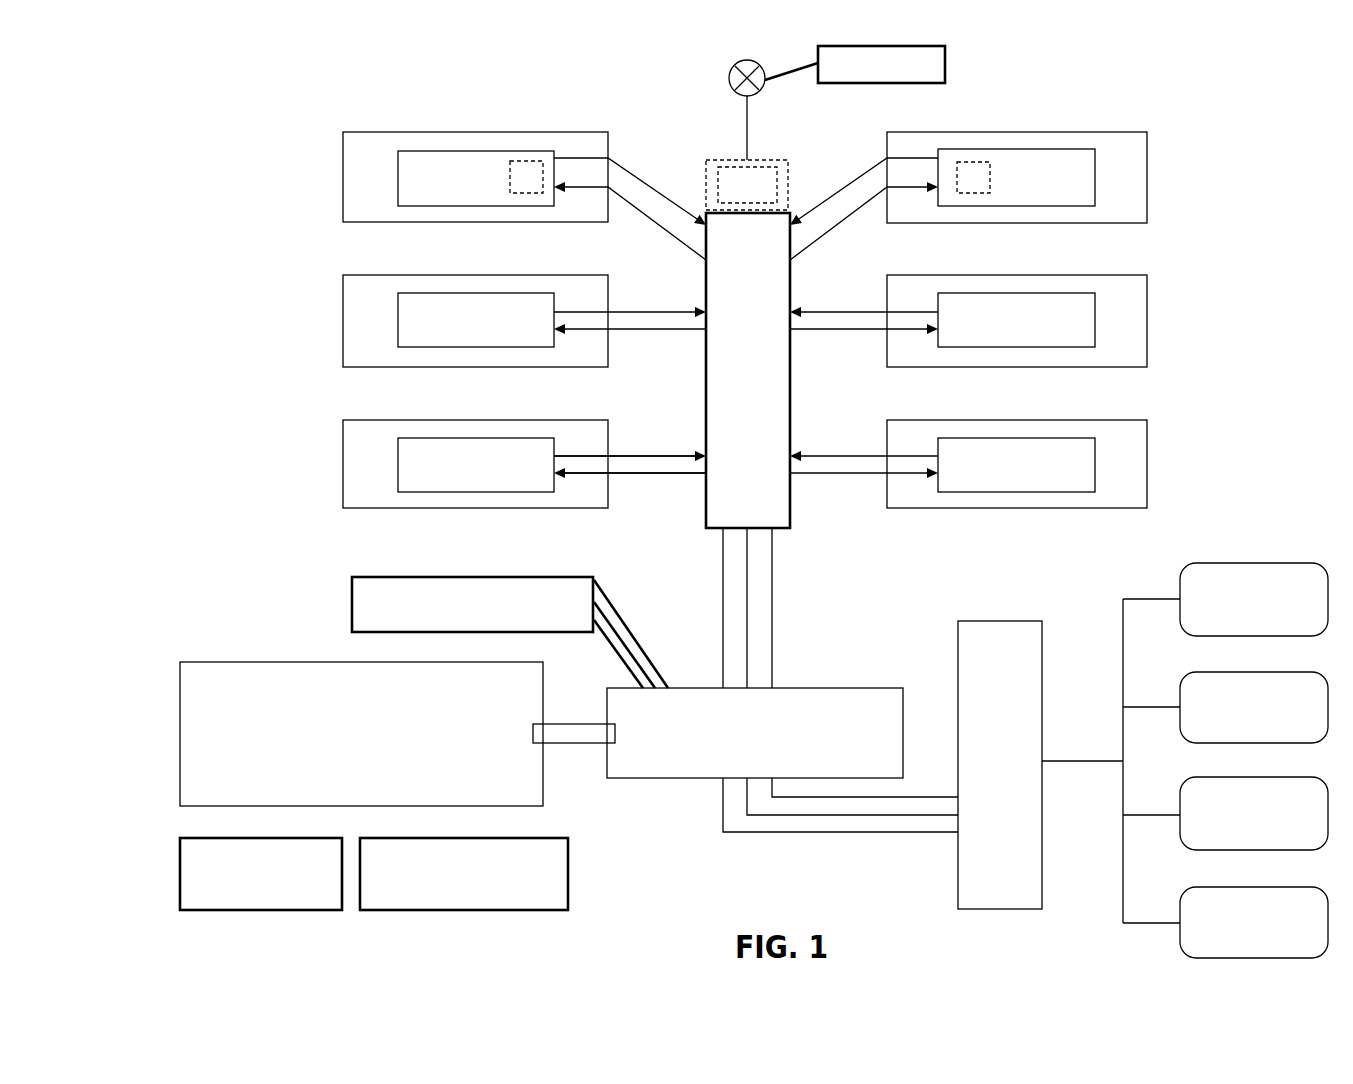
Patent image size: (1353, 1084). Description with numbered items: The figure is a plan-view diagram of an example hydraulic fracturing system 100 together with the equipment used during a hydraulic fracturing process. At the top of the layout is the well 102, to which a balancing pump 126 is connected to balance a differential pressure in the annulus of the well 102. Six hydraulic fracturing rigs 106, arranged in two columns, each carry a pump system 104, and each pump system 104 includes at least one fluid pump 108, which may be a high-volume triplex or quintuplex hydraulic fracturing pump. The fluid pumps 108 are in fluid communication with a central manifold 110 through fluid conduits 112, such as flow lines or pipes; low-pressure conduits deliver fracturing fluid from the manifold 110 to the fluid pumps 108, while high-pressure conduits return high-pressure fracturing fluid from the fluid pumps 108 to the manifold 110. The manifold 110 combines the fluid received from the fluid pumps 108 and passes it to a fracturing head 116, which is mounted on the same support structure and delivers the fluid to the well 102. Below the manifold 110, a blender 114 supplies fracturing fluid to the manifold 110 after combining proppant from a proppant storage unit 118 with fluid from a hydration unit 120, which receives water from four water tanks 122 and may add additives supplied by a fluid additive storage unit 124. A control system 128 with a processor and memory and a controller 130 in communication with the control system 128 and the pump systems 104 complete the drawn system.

The hydraulic fracturing system 100 is at (176, 63).
The well 102 is at (732, 70).
The pump system 104 is at (458, 192).
The hydraulic fracturing rig 106 is at (343, 132).
The fluid pump 108 is at (525, 161).
The manifold 110 is at (706, 378).
The fluid conduit 112 is at (828, 498).
The blender 114 is at (732, 745).
The fracturing head 116 is at (724, 198).
The proppant storage unit 118 is at (340, 742).
The hydration unit 120 is at (977, 777).
The water tank 122 is at (1232, 612).
The fluid additive storage unit 124 is at (449, 615).
The balancing pump 126 is at (858, 77).
The control system 128 is at (441, 885).
The controller 130 is at (238, 885).